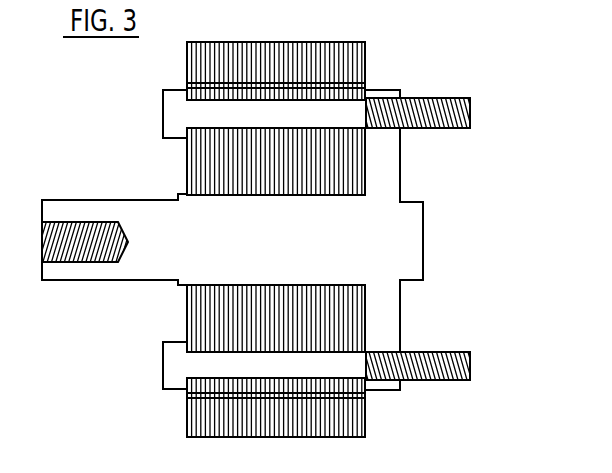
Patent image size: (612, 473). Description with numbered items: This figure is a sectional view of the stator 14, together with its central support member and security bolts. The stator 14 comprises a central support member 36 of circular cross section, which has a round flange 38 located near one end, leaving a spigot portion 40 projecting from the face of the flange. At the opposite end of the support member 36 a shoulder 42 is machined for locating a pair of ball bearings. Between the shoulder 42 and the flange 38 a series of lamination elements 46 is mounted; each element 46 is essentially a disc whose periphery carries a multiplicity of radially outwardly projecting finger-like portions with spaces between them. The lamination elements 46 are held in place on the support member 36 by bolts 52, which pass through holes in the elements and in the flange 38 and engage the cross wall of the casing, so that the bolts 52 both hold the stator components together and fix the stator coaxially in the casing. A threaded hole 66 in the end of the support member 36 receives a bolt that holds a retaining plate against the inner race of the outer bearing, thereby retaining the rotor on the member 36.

The stator 14 is at (124, 136).
The central support member 36 is at (88, 196).
The threaded hole 66 is at (106, 220).
The shoulder 42 is at (177, 284).
The lamination elements 46 is at (280, 60).
The flange 38 is at (388, 183).
The spigot portion 40 is at (423, 253).
The bolts 52 is at (446, 107).